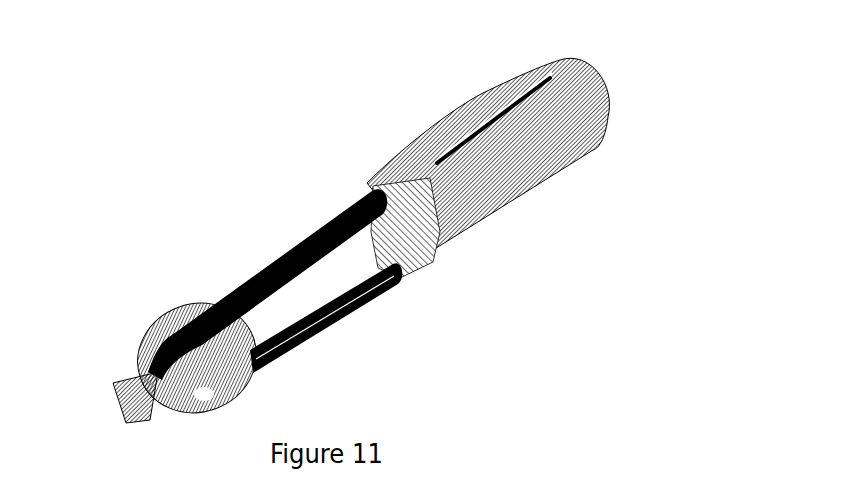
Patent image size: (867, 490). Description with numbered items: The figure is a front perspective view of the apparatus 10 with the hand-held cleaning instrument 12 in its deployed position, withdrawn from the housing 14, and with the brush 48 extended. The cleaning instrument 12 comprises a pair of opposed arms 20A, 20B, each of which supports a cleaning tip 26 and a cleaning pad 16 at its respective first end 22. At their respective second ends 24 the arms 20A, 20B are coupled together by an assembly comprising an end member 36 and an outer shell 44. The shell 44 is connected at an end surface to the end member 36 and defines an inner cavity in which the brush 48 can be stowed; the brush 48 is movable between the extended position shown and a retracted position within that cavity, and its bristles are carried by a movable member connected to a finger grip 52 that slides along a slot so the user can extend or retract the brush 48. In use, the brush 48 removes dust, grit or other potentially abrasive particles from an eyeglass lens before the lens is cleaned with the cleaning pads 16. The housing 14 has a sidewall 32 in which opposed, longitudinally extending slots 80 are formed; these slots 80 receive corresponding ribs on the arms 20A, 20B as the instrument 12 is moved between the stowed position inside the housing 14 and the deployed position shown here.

The apparatus 10 is at (298, 128).
The hand-held cleaning instrument 12 is at (263, 216).
The housing 14 is at (618, 65).
The cleaning pad 16 is at (390, 254).
The arm 20A is at (338, 323).
The arm 20B is at (261, 269).
The first end 22 is at (362, 196).
The second end 24 is at (197, 307).
The cleaning tip 26 is at (385, 228).
The sidewall 32 is at (552, 176).
The end member 36 is at (297, 343).
The outer shell 44 is at (126, 339).
The brush 48 is at (140, 424).
The finger grip 52 is at (207, 411).
The slot 80 is at (423, 168).